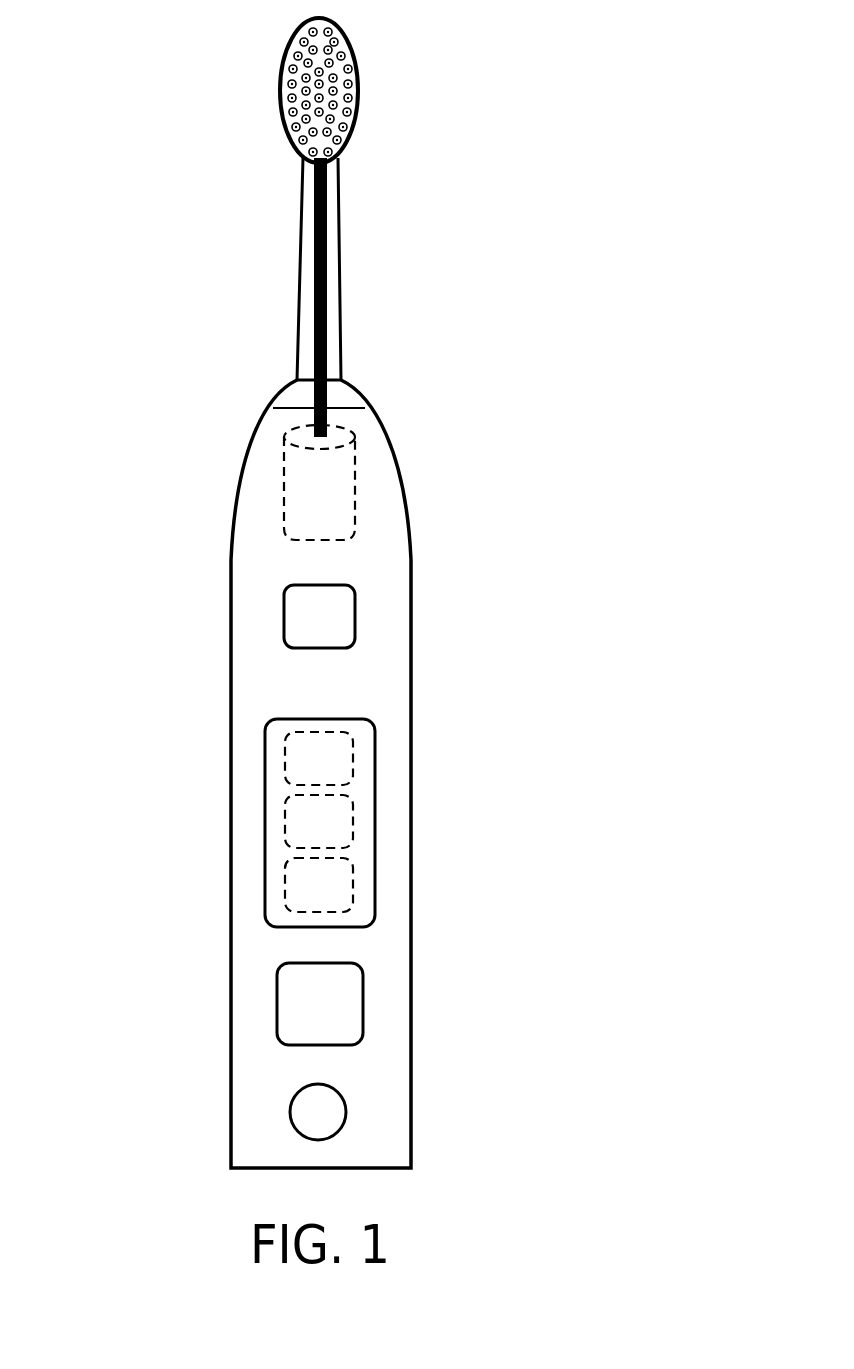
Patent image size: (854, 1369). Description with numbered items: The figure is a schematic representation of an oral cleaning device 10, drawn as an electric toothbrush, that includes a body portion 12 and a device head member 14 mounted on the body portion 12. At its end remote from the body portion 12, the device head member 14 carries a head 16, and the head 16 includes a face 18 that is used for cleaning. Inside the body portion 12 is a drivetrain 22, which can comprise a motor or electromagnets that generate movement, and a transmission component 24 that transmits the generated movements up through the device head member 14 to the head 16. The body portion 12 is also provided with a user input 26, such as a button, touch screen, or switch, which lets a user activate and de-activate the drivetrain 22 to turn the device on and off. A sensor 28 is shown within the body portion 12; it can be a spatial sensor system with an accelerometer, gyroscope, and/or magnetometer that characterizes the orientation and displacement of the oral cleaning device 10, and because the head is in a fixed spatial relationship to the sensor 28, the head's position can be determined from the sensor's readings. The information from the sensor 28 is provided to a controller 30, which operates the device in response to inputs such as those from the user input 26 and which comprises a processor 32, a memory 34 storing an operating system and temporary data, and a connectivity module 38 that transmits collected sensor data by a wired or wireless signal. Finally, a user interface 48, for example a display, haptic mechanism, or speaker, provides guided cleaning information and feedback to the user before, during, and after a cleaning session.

The oral cleaning device 10 is at (122, 70).
The body portion 12 is at (210, 565).
The device head member 14 is at (276, 272).
The head 16 is at (282, 93).
The face 18 is at (353, 93).
The drivetrain 22 is at (341, 478).
The transmission component 24 is at (327, 275).
The user input 26 is at (302, 1110).
The sensor 28 is at (341, 614).
The controller 30 is at (270, 824).
The processor 32 is at (340, 755).
The memory 34 is at (340, 822).
The connectivity module 38 is at (340, 882).
The user interface 48 is at (341, 1000).